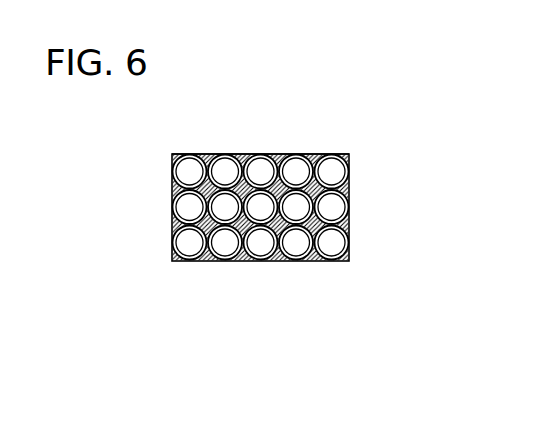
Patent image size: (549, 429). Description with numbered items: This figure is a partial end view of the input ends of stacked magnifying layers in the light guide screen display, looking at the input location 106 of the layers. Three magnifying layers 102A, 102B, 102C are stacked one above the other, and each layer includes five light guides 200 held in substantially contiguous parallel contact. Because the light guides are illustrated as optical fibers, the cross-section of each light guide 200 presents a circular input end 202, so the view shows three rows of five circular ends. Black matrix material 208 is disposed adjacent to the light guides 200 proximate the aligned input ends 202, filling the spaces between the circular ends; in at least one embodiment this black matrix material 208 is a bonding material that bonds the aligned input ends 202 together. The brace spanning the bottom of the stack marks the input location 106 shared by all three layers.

The input location 106 is at (350, 280).
The magnifying layer 102A is at (279, 161).
The magnifying layer 102B is at (354, 205).
The magnifying layer 102C is at (354, 244).
The light guide 200 is at (335, 155).
The input end 202 is at (187, 170).
The black matrix material 208 is at (172, 230).